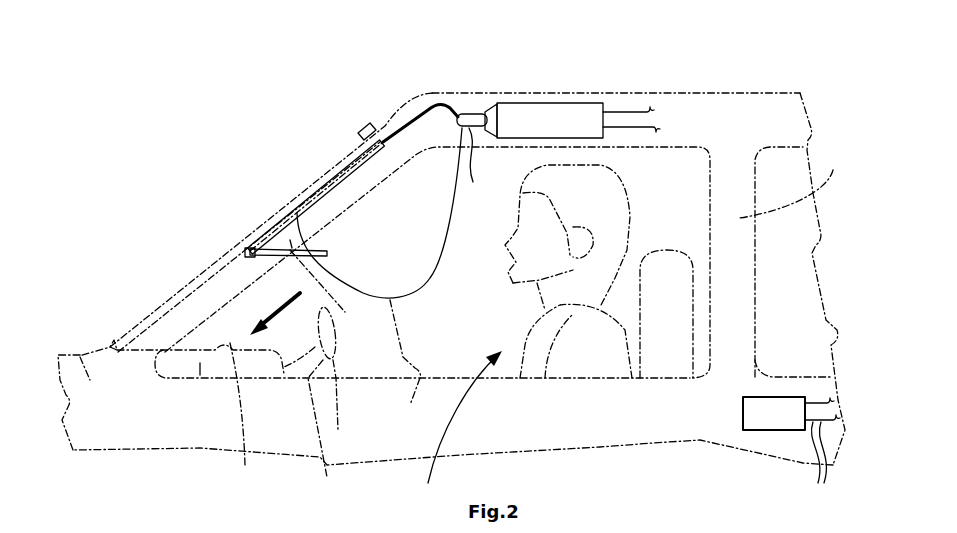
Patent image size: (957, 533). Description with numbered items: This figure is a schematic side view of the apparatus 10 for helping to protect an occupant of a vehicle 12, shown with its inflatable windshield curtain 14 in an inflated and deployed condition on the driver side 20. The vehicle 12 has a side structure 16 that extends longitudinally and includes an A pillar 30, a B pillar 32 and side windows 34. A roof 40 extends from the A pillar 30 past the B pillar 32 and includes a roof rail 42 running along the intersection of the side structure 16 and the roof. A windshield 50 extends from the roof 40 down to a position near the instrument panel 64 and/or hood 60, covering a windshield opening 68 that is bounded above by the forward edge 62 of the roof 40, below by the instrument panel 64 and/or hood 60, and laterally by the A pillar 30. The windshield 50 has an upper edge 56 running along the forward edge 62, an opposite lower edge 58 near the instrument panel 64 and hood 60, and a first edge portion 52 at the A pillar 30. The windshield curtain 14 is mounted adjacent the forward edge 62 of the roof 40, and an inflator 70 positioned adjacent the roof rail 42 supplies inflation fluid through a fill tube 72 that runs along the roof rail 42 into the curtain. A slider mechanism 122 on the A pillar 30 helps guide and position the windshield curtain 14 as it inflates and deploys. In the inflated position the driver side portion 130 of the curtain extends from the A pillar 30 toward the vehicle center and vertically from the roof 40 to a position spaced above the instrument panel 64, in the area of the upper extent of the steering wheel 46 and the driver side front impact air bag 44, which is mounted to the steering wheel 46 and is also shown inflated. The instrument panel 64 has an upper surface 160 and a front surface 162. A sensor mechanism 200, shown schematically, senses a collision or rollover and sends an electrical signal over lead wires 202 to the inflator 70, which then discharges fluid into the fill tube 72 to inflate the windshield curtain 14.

The apparatus 10 is at (298, 106).
The vehicle 12 is at (352, 54).
The inflatable windshield curtain 14 is at (430, 203).
The side structure 16 is at (653, 417).
The driver side 20 is at (458, 430).
The A pillar 30 is at (340, 308).
The B pillar 32 is at (792, 184).
The side windows 34 is at (690, 170).
The roof 40 is at (723, 107).
The roof rail 42 is at (687, 120).
The driver side front impact air bag 44 is at (417, 383).
The steering wheel 46 is at (315, 347).
The windshield 50 is at (230, 252).
The first edge portion 52 is at (280, 207).
The upper edge 56 is at (357, 132).
The lower edge 58 is at (112, 335).
The hood 60 is at (78, 355).
The forward edge 62 is at (382, 123).
The instrument panel 64 is at (200, 380).
The windshield opening 68 is at (310, 159).
The inflator 70 is at (548, 122).
The fill tube 72 is at (485, 162).
The slider mechanism 122 is at (262, 237).
The driver side portion 130 is at (420, 227).
The upper surface 160 is at (248, 420).
The front surface 162 is at (327, 433).
The sensor mechanism 200 is at (770, 415).
The lead wires 202 is at (620, 125).